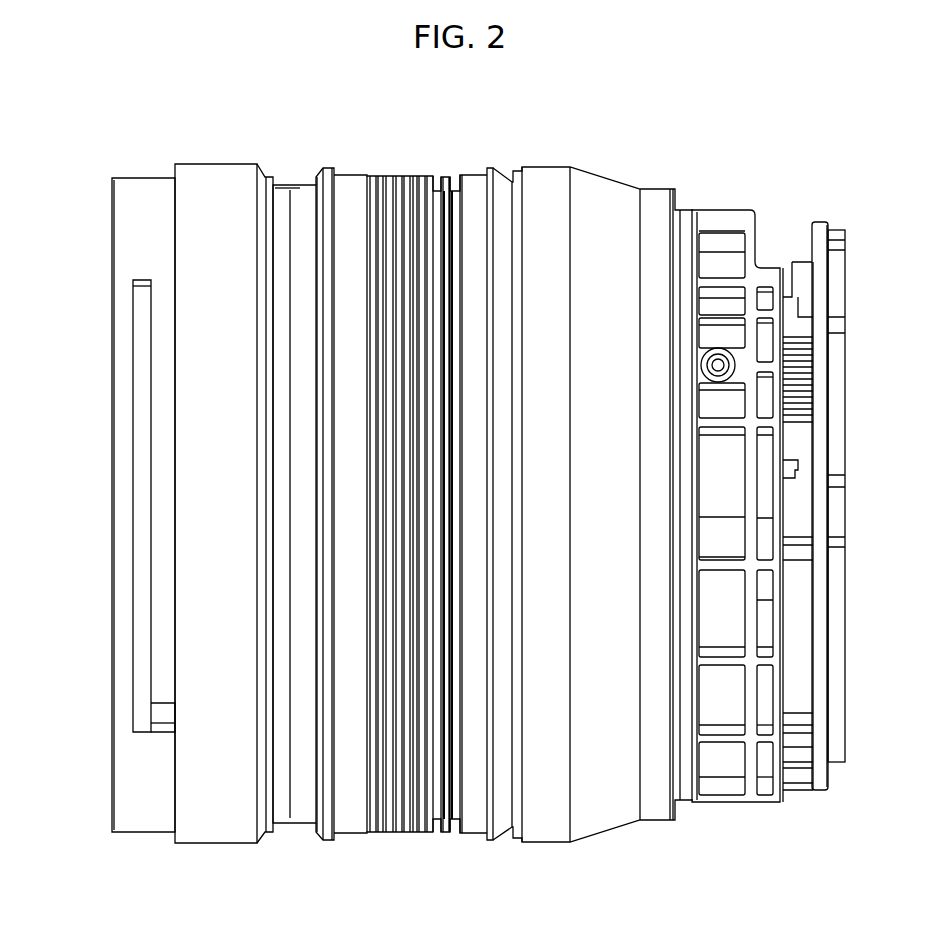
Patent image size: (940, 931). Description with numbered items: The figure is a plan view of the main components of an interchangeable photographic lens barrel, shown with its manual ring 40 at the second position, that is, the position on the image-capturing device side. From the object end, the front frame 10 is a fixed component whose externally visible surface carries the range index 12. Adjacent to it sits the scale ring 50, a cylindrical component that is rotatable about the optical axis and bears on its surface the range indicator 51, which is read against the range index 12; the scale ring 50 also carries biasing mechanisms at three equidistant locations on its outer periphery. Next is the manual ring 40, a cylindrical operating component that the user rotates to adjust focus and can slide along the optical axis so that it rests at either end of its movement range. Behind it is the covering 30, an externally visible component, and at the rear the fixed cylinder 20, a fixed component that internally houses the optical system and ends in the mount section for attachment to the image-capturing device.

The front frame 10 is at (148, 193).
The range index 12 is at (257, 180).
The fixed cylinder 20 is at (841, 270).
The covering 30 is at (610, 213).
The manual ring 40 is at (355, 200).
The scale ring 50 is at (292, 787).
The range indicator 51 is at (290, 198).